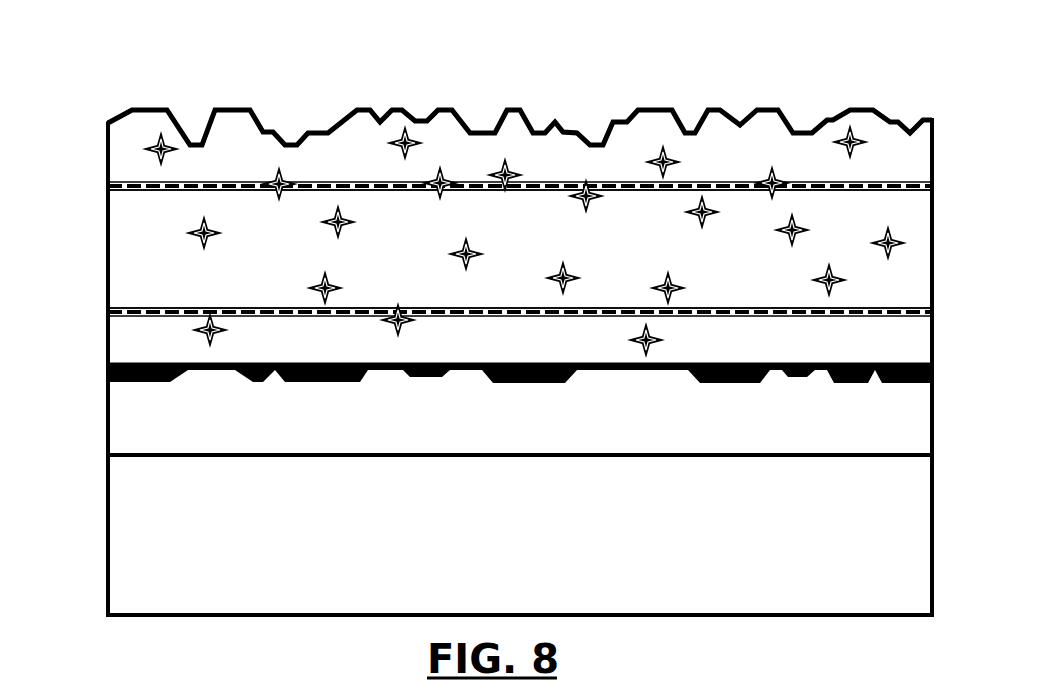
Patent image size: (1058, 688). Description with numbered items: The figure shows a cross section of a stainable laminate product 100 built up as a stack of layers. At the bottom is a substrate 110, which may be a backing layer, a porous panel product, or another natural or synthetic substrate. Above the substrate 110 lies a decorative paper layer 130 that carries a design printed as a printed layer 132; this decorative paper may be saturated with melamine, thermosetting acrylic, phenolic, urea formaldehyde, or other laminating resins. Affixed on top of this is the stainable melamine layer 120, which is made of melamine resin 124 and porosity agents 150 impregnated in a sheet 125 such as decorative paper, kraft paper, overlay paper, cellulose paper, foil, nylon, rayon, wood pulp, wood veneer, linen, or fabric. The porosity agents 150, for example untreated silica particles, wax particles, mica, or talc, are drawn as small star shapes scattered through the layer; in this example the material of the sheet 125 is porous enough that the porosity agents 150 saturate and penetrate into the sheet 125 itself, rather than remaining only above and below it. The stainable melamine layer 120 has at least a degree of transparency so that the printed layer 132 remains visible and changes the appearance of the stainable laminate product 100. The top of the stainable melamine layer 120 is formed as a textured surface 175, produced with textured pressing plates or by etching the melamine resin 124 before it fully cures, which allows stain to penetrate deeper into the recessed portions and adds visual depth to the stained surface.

The stainable laminate product 100 is at (830, 104).
The substrate 110 is at (176, 596).
The stainable melamine layer 120 is at (100, 363).
The melamine resin 124 is at (355, 152).
The sheet 125 is at (176, 297).
The decorative paper layer 130 is at (178, 436).
The printed layer 132 is at (135, 382).
The porosity agent 150 is at (160, 140).
The textured surface 175 is at (560, 126).